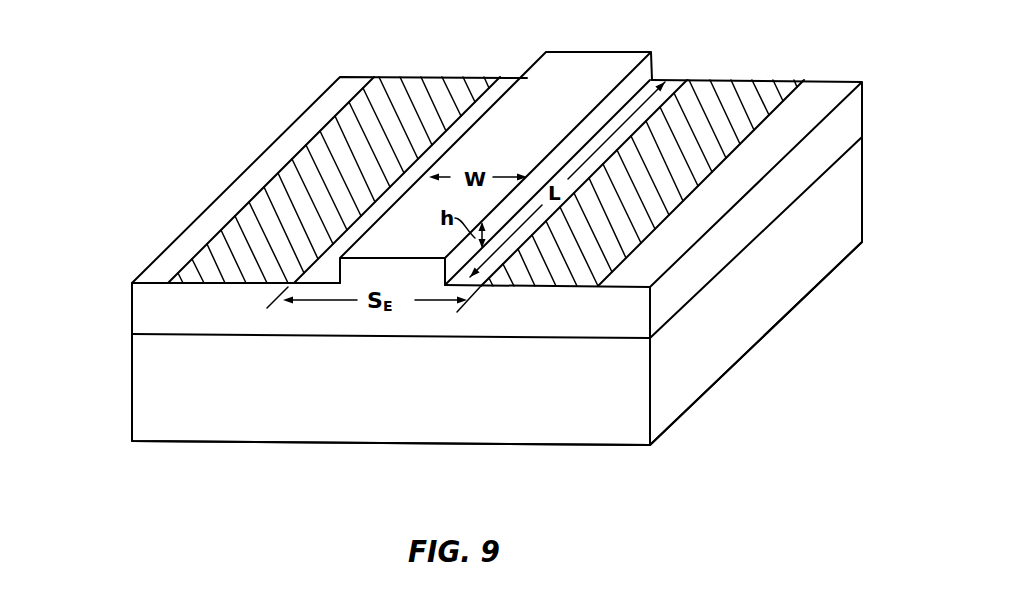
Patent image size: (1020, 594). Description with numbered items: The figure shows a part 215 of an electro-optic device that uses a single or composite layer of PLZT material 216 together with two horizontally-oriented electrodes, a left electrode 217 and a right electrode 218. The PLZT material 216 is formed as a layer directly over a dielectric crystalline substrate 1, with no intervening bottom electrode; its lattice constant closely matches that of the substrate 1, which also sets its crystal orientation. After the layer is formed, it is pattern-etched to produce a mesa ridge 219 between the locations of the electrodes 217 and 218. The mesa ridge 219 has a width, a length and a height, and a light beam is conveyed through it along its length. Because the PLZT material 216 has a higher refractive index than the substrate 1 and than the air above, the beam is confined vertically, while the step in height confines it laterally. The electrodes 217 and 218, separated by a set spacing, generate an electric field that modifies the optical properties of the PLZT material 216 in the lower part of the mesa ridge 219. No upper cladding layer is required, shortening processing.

The part of an electro-optic device 215 is at (86, 485).
The PLZT material layer 216 is at (142, 327).
The dielectric crystalline substrate 1 is at (138, 428).
The left electrode 217 is at (445, 82).
The right electrode 218 is at (725, 83).
The mesa ridge 219 is at (328, 268).